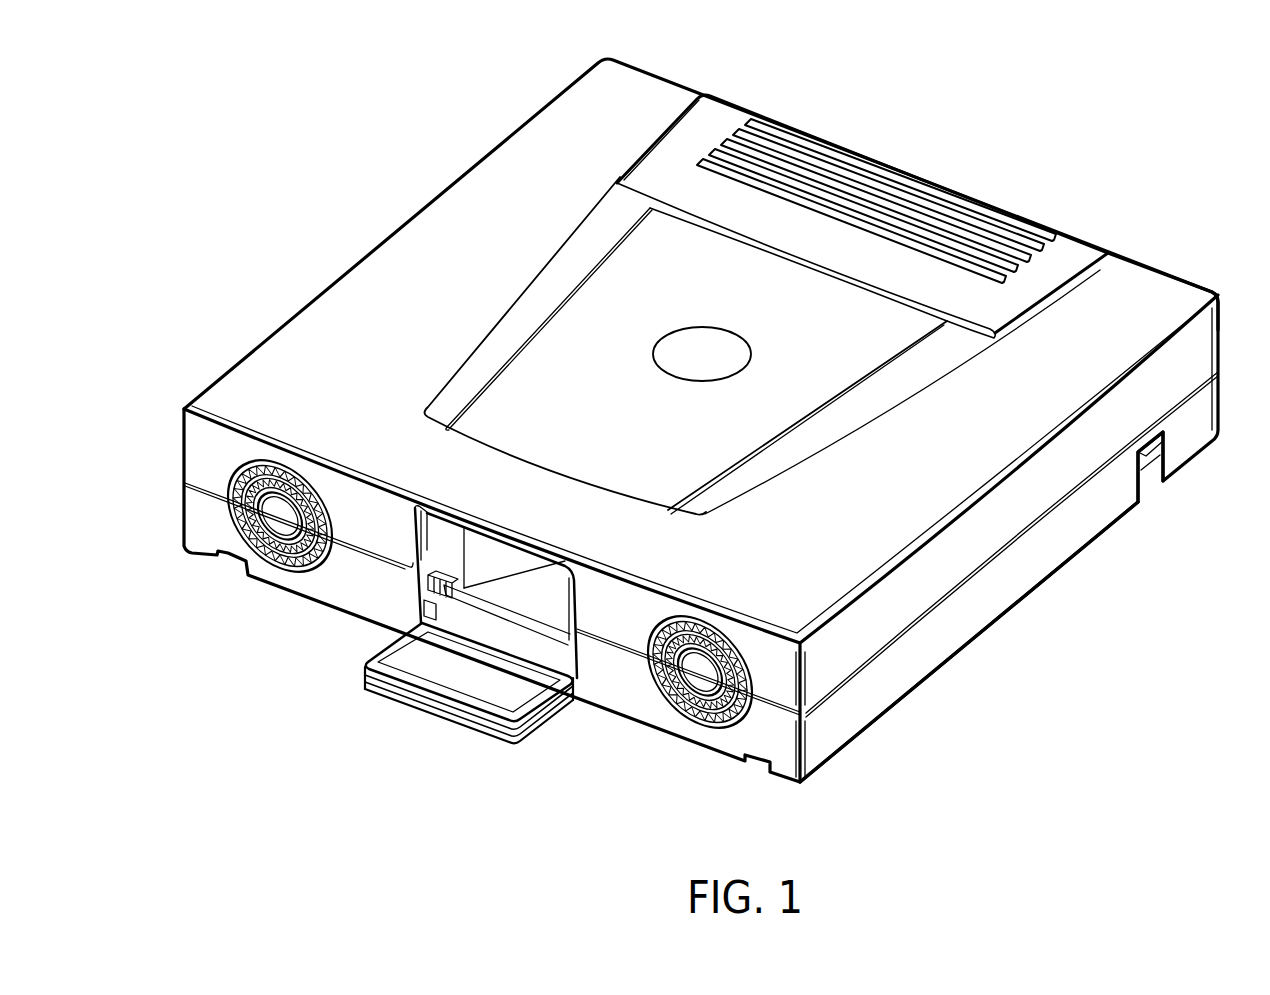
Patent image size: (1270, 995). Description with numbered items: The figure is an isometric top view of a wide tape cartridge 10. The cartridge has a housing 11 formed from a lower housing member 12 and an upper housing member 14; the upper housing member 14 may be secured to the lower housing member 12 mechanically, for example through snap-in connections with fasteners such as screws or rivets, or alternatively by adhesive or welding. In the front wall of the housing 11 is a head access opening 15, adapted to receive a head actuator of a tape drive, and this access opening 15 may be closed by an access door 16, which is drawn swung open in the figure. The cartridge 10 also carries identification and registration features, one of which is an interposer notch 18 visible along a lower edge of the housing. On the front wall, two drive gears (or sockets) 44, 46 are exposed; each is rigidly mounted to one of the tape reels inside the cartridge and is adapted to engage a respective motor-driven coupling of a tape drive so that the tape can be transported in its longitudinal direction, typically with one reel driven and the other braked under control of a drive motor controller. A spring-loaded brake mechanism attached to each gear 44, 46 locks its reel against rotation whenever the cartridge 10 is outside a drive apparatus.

The tape cartridge 10 is at (881, 762).
The housing 11 is at (933, 676).
The lower housing member 12 is at (1010, 573).
The upper housing member 14 is at (1162, 294).
The head access opening 15 is at (482, 552).
The access door 16 is at (443, 712).
The interposer notch 18 is at (1151, 487).
The drive gear 44 is at (272, 566).
The drive gear 46 is at (697, 719).